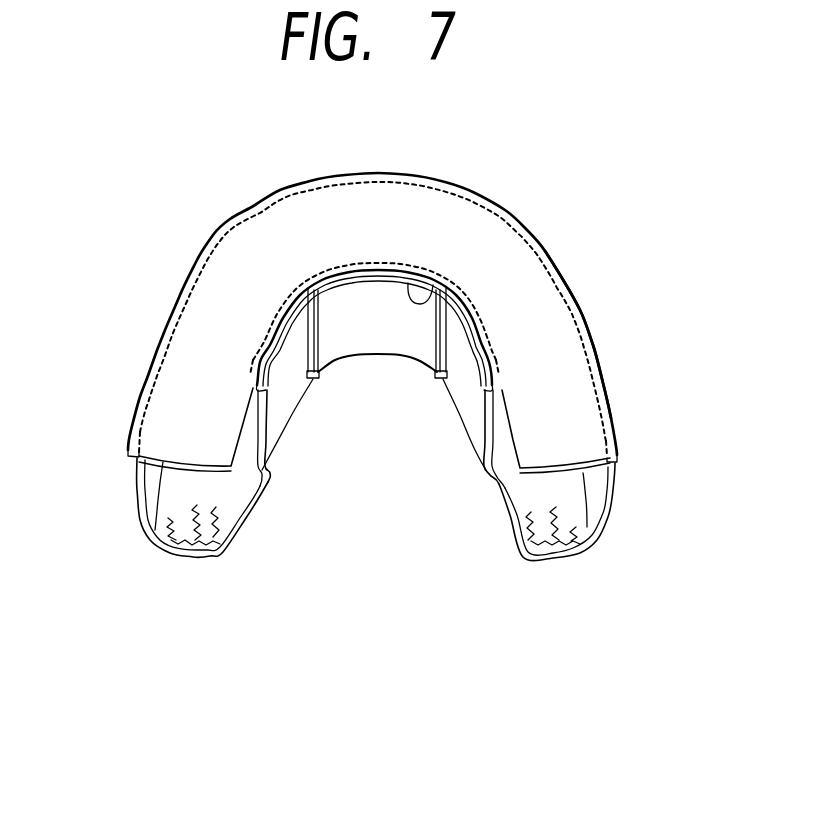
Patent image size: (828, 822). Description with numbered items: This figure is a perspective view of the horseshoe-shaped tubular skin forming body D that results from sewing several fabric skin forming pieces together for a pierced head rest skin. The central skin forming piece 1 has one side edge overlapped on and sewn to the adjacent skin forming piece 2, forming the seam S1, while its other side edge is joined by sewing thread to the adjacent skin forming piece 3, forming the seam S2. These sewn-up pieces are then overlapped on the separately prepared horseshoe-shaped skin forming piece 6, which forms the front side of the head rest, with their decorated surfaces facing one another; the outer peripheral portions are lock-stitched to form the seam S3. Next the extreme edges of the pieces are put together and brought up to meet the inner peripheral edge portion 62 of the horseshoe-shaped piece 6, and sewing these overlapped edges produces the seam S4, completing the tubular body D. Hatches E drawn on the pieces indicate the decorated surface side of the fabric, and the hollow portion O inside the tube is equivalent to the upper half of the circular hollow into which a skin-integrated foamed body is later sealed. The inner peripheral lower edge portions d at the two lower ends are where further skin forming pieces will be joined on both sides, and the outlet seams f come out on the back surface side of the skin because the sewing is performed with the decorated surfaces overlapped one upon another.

The horseshoe-shaped tubular skin forming body D is at (205, 218).
The skin forming piece 1 is at (388, 293).
The horseshoe-shaped skin forming piece 6 is at (295, 212).
The inner peripheral edge portion 62 is at (433, 290).
The outlet seam f is at (563, 270).
The seam S1 is at (448, 347).
The seam S2 is at (307, 347).
The seam S3 is at (593, 380).
The seam S4 is at (288, 303).
The skin forming piece 2 is at (613, 507).
The skin forming piece 3 is at (133, 505).
The inner peripheral lower edge portions d is at (257, 480).
The hollow portion O is at (188, 490).
The hatches E is at (192, 537).